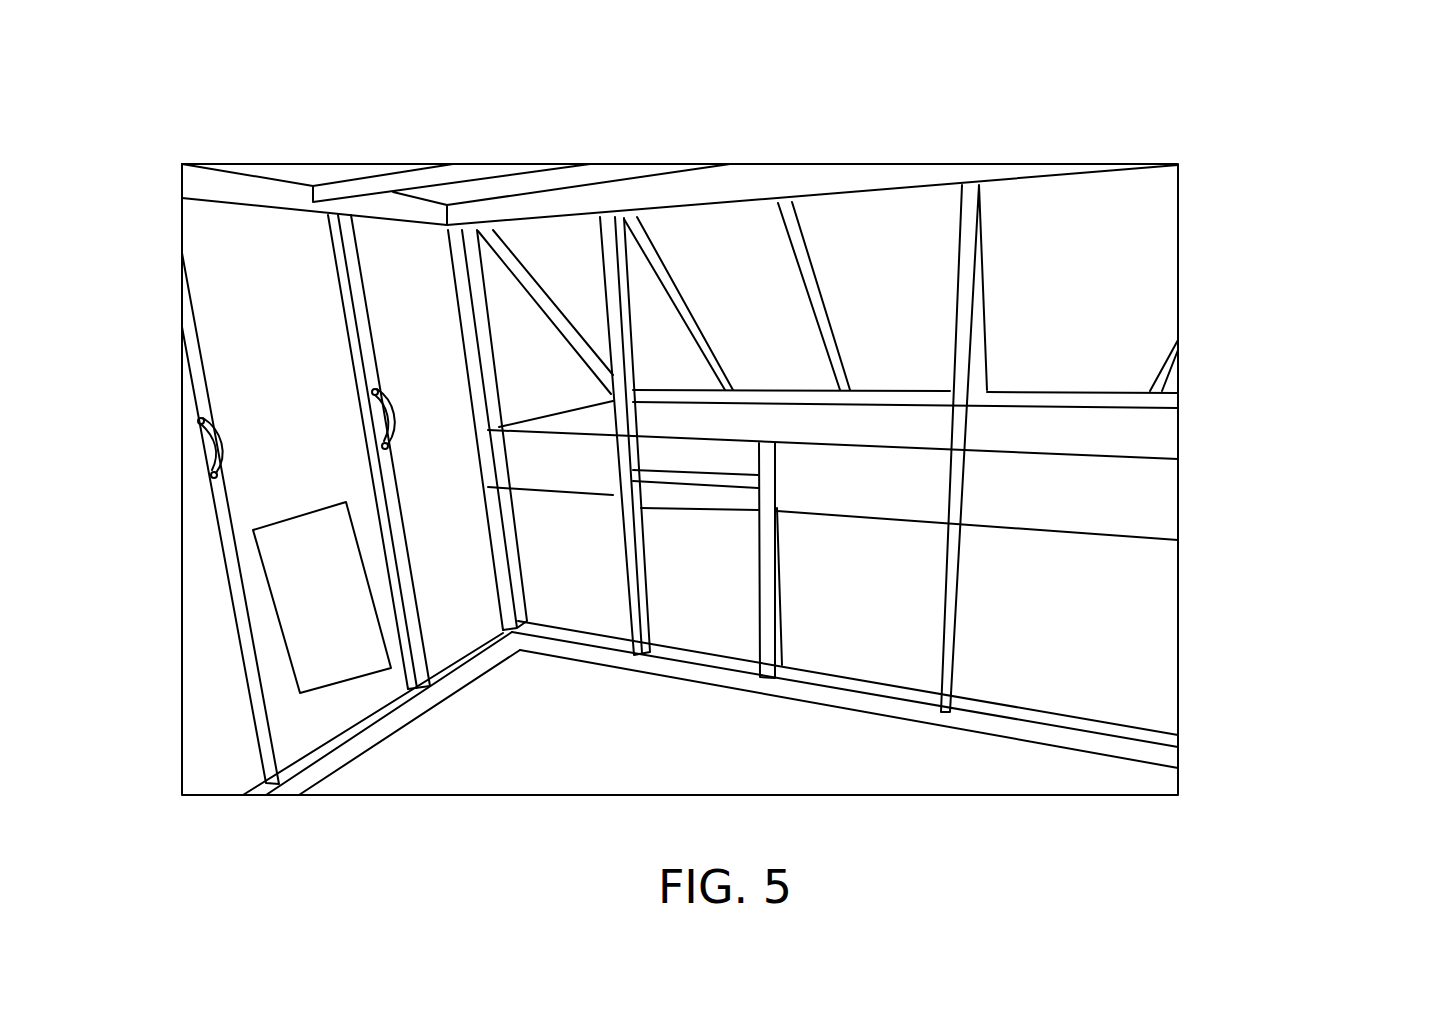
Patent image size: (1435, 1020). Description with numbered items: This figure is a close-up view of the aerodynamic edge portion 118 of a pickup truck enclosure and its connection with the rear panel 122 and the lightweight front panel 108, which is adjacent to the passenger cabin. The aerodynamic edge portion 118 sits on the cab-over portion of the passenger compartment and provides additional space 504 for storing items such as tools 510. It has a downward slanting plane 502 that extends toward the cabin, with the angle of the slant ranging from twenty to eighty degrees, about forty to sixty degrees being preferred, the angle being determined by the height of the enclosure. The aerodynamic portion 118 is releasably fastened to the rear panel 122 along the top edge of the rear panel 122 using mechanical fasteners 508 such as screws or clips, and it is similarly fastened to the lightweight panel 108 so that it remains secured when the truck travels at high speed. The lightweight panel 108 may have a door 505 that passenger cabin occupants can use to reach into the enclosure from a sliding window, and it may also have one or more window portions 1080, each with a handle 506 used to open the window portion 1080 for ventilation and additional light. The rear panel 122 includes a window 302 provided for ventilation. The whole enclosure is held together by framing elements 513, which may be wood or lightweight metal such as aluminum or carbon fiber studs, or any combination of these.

The lightweight panel 108 is at (254, 190).
The mechanical fasteners 508 is at (476, 331).
The window portion 1080 is at (277, 330).
The handle 506 is at (200, 428).
The door 505 is at (309, 601).
The downward slanting plane 502 is at (1100, 237).
The aerodynamic edge portion 118 is at (1200, 292).
The tools 510 is at (1110, 425).
The additional space 504 is at (1127, 437).
The rear panel 122 is at (1073, 602).
The window 302 is at (730, 585).
The framing elements 513 is at (958, 628).